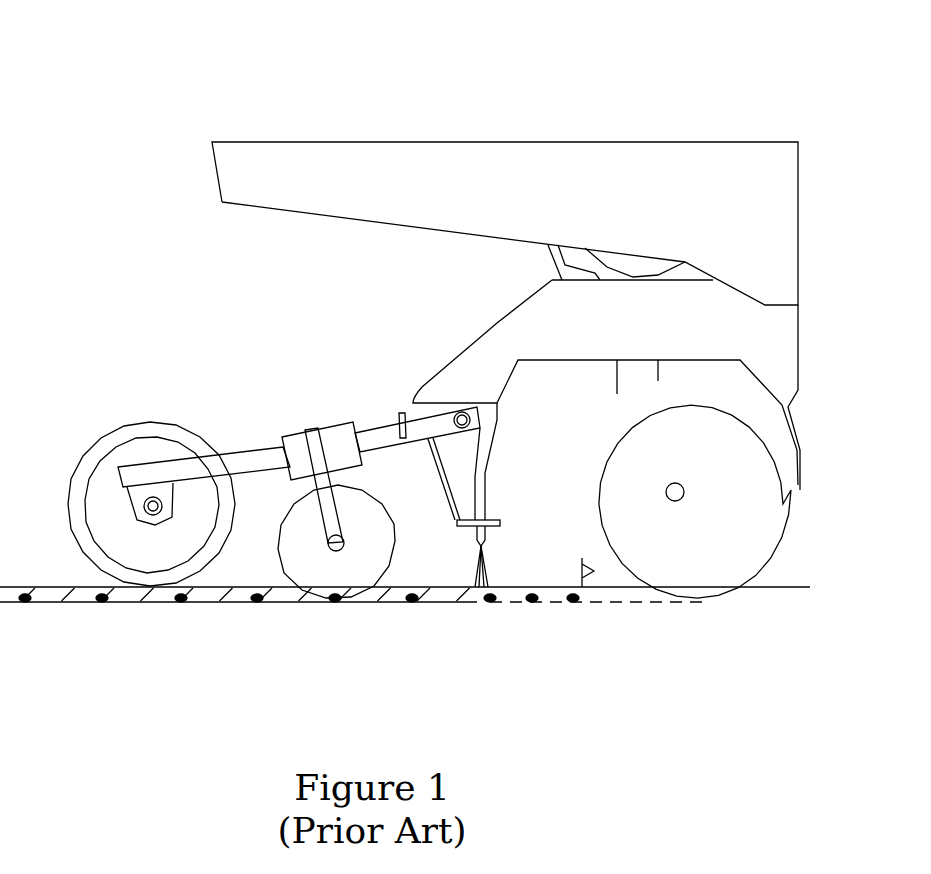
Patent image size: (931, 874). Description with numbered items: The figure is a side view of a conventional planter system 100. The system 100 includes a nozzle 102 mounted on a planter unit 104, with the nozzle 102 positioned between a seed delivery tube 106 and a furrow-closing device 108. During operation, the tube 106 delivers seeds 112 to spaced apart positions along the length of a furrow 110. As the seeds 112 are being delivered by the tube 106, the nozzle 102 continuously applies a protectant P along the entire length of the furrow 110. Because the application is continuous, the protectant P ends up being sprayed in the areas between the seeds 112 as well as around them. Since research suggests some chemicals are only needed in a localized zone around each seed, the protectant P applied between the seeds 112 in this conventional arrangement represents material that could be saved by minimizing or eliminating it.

The planter system 100 is at (111, 89).
The nozzle 102 is at (488, 533).
The planter unit 104 is at (342, 218).
The seed delivery tube 106 is at (582, 571).
The furrow-closing device 108 is at (270, 472).
The furrow 110 is at (440, 603).
The seeds 112 is at (28, 602).
The protectant P is at (477, 565).